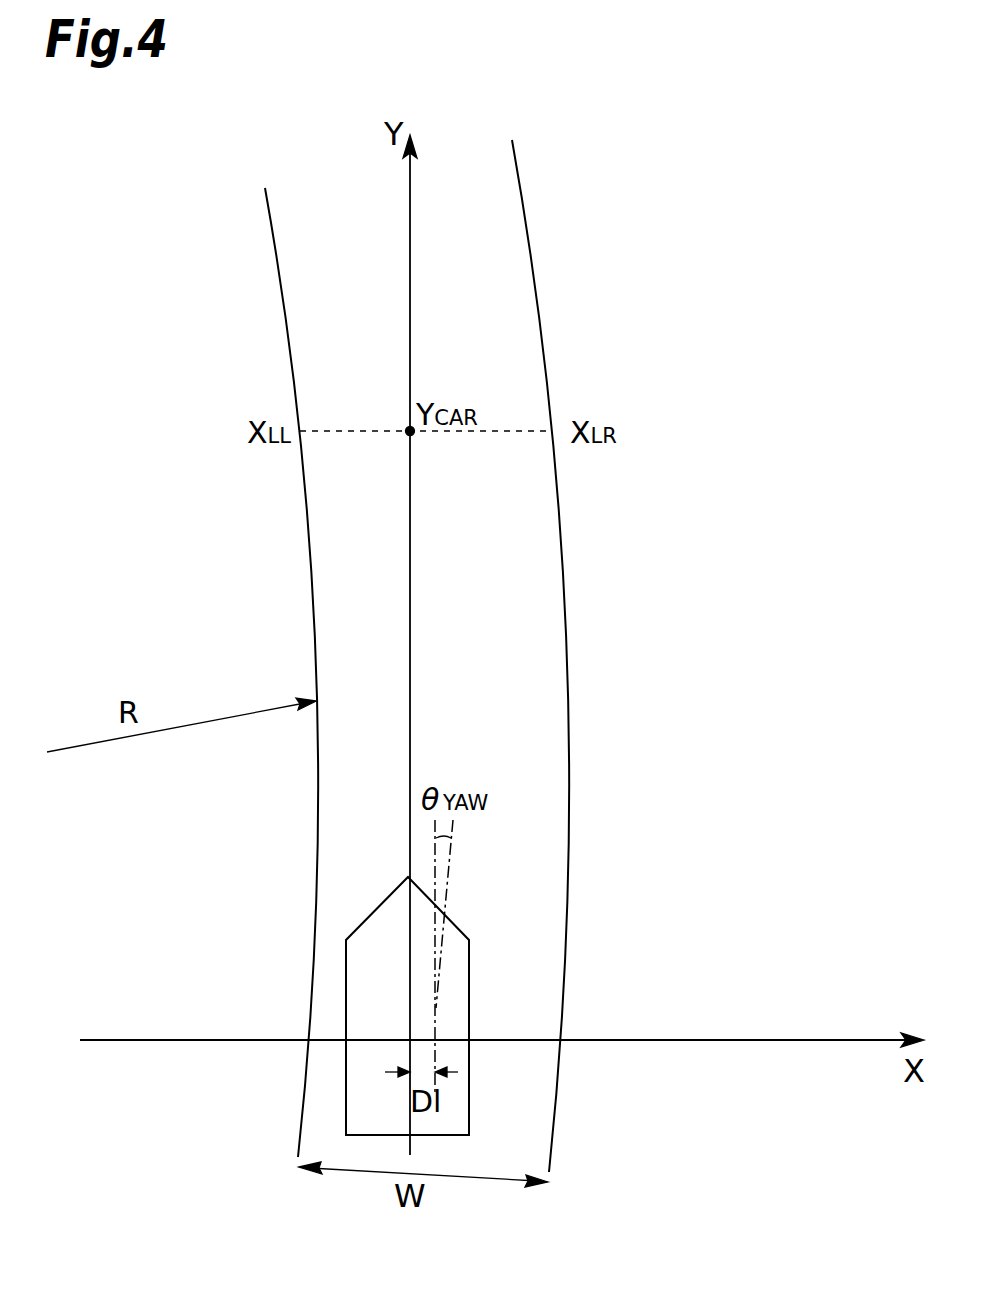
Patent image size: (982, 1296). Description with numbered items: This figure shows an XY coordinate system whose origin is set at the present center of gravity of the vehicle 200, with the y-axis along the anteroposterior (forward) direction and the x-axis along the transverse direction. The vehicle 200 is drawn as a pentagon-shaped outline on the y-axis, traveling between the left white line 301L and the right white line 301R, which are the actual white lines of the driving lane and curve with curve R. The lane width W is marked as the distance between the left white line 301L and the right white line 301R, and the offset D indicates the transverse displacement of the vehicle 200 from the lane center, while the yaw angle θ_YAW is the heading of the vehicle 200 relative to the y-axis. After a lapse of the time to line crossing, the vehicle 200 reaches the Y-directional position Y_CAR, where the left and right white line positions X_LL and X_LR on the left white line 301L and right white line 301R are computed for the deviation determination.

The left white line 301L is at (312, 567).
The right white line 301R is at (563, 570).
The vehicle 200 is at (346, 974).